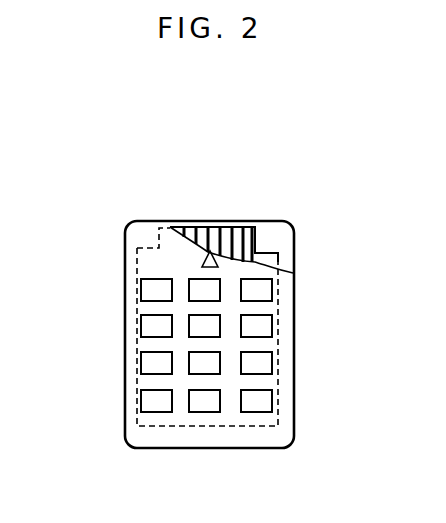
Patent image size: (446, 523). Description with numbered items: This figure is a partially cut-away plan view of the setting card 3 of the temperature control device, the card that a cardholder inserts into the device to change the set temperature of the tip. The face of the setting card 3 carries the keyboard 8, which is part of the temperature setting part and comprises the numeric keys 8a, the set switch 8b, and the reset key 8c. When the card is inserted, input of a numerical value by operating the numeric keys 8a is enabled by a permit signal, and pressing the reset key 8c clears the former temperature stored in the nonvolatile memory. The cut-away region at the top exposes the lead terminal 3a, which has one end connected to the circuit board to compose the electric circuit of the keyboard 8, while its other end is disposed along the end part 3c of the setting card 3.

The setting card 3 is at (120, 290).
The lead terminal 3a is at (243, 222).
The end part 3c is at (137, 228).
The keyboard 8 is at (250, 395).
The numeric keys 8a is at (263, 294).
The set switch 8b is at (206, 413).
The reset key 8c is at (256, 413).